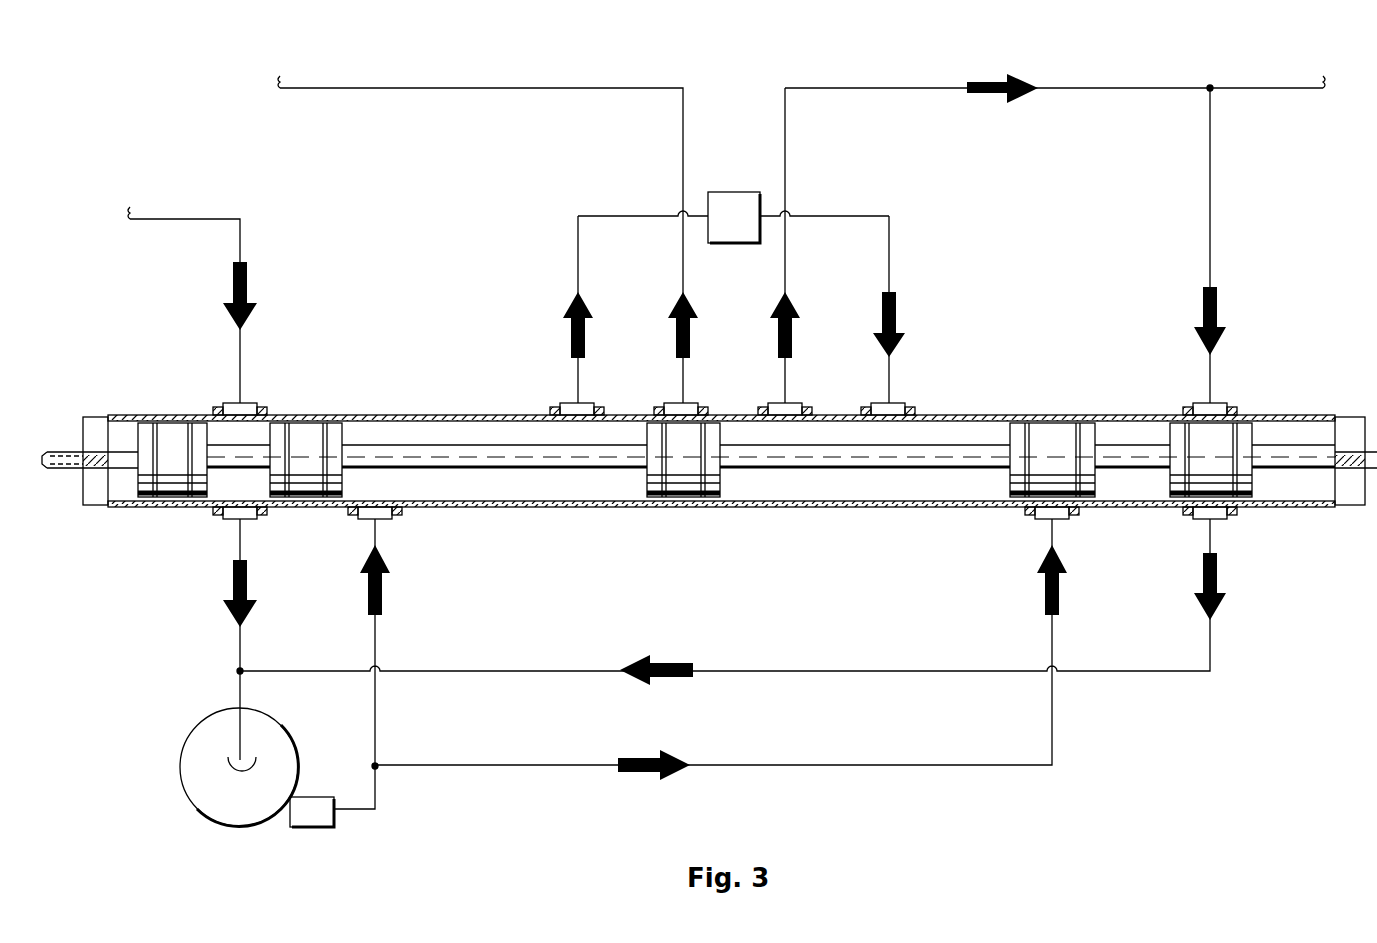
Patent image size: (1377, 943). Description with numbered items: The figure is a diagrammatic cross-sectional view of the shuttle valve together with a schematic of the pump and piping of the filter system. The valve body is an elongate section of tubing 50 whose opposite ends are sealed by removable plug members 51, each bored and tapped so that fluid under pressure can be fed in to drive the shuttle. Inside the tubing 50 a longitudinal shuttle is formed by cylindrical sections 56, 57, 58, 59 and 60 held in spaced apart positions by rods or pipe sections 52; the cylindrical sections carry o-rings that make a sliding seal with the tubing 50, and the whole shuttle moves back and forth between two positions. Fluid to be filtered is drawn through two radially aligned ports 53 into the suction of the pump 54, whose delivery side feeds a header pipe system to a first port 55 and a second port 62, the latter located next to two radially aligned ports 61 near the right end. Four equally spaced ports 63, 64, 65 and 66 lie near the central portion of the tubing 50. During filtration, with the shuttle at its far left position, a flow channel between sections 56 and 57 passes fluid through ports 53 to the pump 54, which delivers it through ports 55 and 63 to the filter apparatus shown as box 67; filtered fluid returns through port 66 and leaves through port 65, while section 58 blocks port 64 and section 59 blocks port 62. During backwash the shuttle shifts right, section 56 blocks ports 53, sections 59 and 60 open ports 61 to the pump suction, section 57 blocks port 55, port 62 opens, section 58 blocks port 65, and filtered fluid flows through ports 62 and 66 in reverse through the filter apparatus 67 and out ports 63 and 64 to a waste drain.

The tubing 50 is at (465, 412).
The plug member 51 is at (95, 420).
The rods or pipe sections 52 is at (228, 472).
The radially aligned ports 53 is at (230, 407).
The pump 54 is at (208, 735).
The first port 55 is at (387, 510).
The end cylindrical section 56 is at (163, 435).
The cylindrical section 57 is at (315, 430).
The cylindrical section 58 is at (680, 477).
The cylindrical section 59 is at (1048, 430).
The cylindrical section 60 is at (1220, 440).
The radially aligned ports 61 is at (1213, 403).
The second port 62 is at (1043, 510).
The port 63 is at (570, 404).
The port 64 is at (672, 406).
The port 65 is at (777, 404).
The port 66 is at (882, 404).
The filter apparatus 67 is at (748, 174).